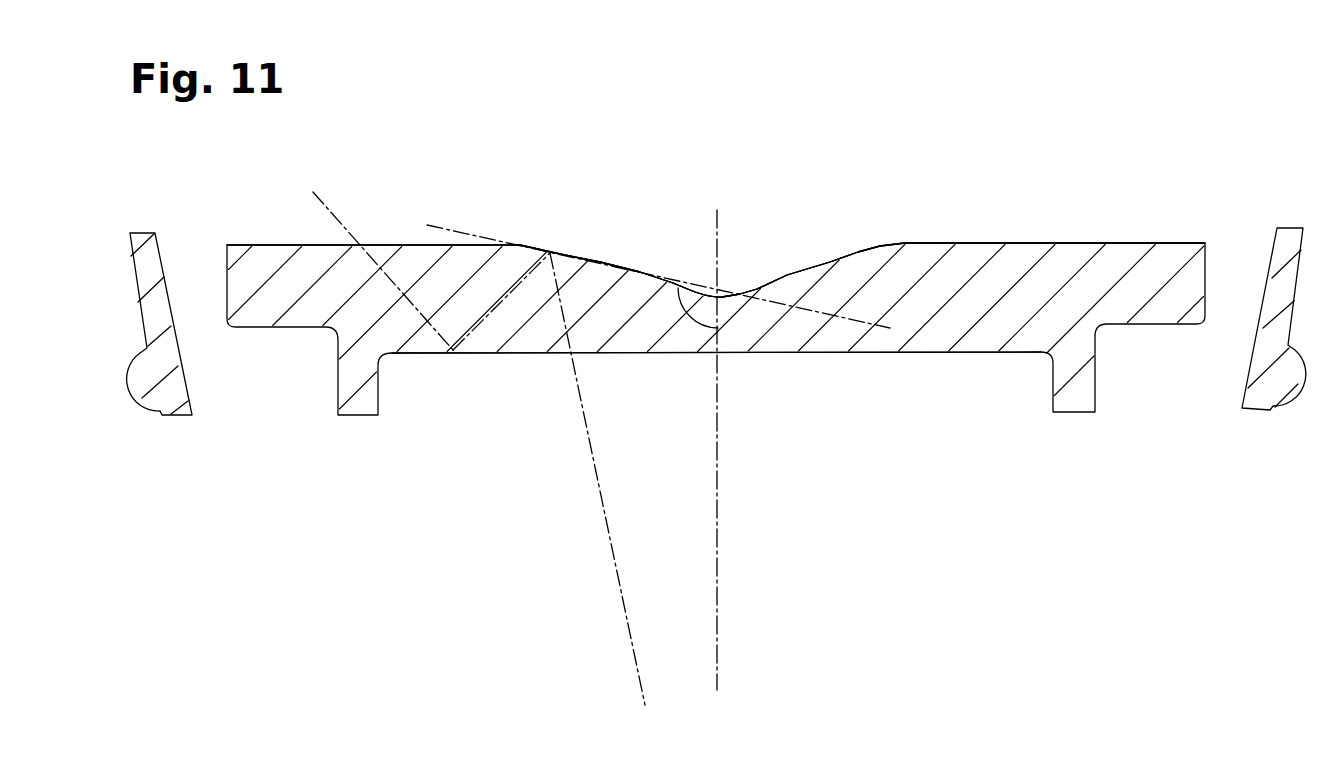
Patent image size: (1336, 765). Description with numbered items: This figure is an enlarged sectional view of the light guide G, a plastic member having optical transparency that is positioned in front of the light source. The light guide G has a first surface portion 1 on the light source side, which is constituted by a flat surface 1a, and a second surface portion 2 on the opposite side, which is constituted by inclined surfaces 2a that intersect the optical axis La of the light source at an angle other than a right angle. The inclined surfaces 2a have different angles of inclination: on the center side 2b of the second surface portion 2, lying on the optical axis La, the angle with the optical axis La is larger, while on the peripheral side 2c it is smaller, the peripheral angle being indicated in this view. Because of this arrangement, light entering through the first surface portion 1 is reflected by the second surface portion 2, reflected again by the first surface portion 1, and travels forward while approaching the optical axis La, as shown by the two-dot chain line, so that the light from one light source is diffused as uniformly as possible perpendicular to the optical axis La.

The first surface portion 1 is at (857, 353).
The flat surface 1a is at (716, 355).
The second surface portion 2 is at (757, 289).
The inclined surface 2a is at (610, 262).
The center side 2b is at (701, 252).
The peripheral side 2c is at (553, 236).
The light guide G is at (989, 205).
The optical axis La is at (718, 662).